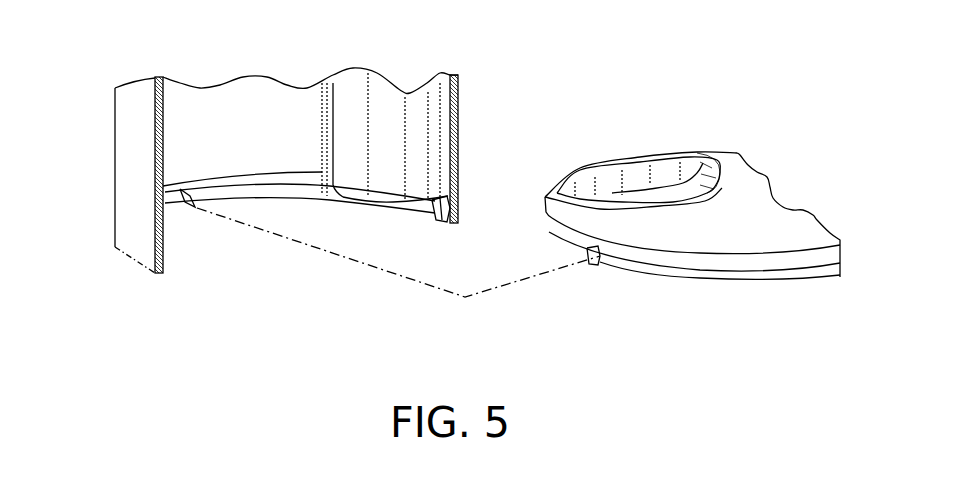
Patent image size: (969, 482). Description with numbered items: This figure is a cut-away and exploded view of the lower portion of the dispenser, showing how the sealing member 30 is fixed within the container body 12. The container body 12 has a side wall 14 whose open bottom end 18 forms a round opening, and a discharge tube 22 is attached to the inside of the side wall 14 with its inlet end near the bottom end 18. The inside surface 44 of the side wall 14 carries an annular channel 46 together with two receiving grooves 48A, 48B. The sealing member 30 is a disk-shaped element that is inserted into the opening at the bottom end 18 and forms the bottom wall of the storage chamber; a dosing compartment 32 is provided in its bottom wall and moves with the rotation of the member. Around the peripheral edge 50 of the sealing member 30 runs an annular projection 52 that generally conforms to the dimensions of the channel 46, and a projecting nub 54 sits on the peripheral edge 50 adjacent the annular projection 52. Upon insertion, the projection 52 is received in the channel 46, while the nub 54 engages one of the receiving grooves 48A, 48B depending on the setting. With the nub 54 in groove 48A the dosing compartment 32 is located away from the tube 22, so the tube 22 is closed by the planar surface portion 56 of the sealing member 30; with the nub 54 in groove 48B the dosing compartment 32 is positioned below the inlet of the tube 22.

The container body 12 is at (136, 141).
The side wall 14 is at (133, 115).
The bottom end 18 is at (128, 257).
The discharge tube 22 is at (422, 128).
The sealing member 30 is at (751, 198).
The dosing compartment 32 is at (662, 180).
The inside surface 44 is at (217, 113).
The annular channel 46 is at (172, 196).
The receiving groove 48A is at (441, 211).
The receiving groove 48B is at (190, 210).
The peripheral edge 50 is at (543, 223).
The annular projection 52 is at (663, 260).
The projecting nub 54 is at (596, 265).
The planar surface portion 56 is at (703, 223).